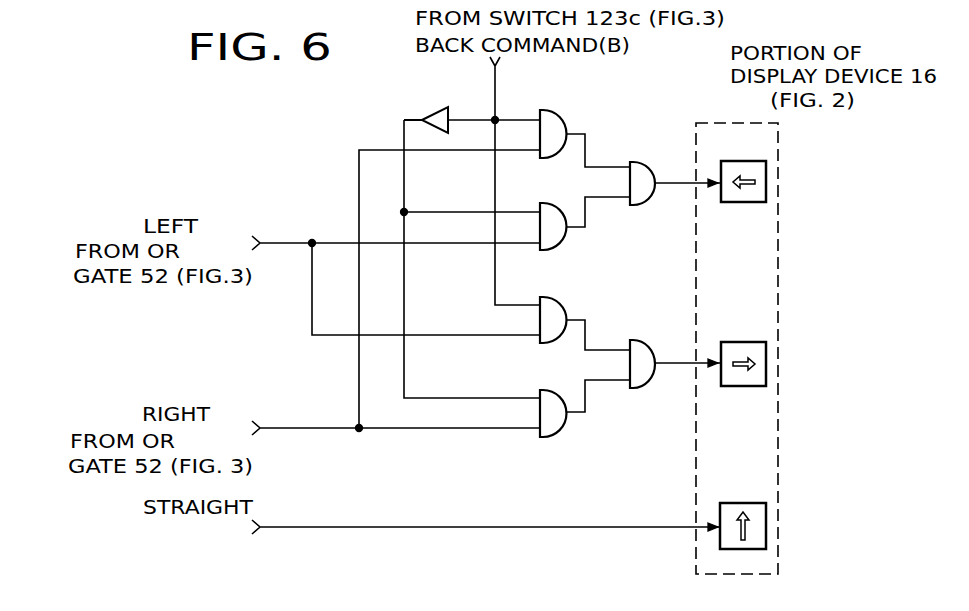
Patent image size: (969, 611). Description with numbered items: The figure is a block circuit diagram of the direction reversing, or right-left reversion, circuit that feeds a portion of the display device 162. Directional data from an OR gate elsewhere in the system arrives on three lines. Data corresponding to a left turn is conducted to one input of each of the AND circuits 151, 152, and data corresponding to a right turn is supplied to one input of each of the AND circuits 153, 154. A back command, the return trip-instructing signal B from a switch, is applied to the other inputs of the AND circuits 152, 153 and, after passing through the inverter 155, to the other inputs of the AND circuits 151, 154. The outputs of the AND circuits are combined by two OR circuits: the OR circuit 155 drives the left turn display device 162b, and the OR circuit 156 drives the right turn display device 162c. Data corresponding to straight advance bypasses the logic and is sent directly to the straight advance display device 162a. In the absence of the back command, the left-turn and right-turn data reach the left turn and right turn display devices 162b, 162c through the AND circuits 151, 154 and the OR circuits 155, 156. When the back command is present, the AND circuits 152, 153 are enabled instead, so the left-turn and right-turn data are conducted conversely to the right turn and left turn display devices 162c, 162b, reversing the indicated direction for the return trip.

The AND circuit 151 is at (548, 198).
The AND circuit 152 is at (550, 296).
The AND circuit 153 is at (548, 108).
The AND circuit 154 is at (550, 386).
The inverter 155 is at (430, 110).
The OR circuit 156 is at (640, 342).
The display device portion 162 is at (778, 283).
The straight advance display device 162a is at (767, 527).
The left turn display device 162b is at (767, 183).
The right turn display device 162c is at (767, 364).